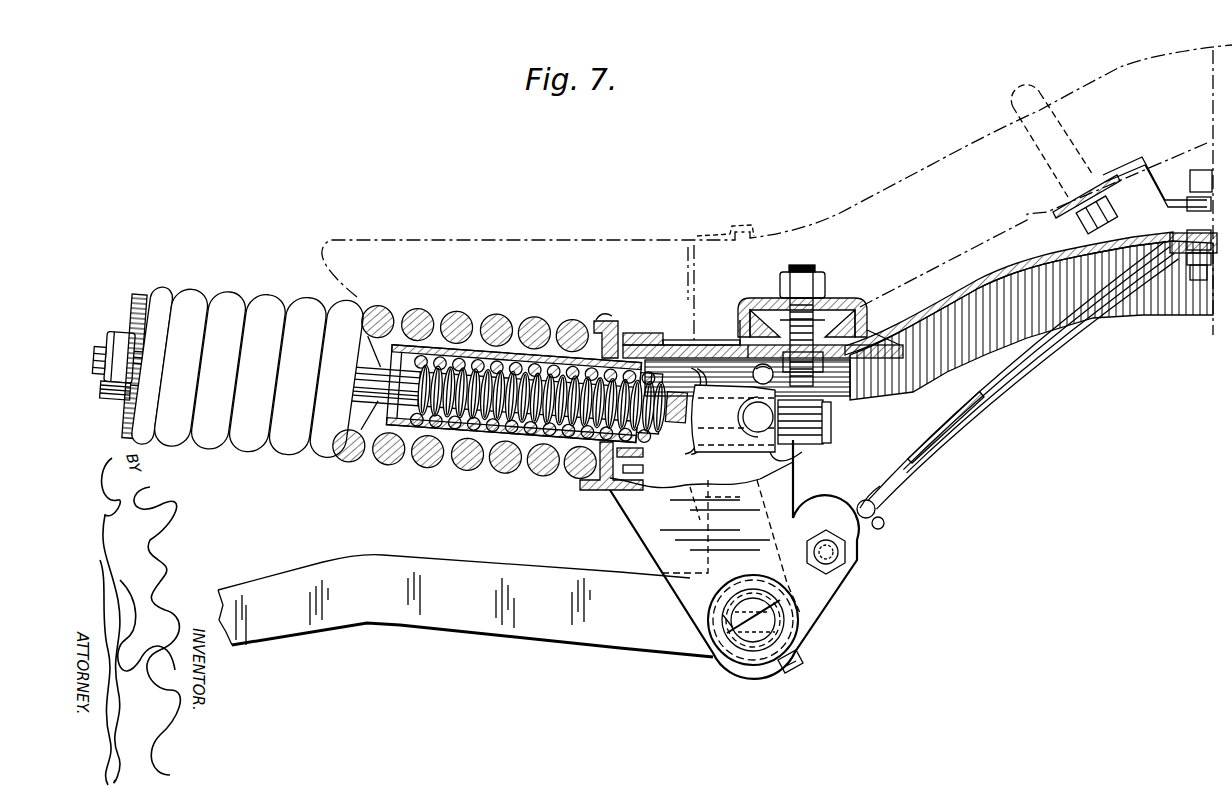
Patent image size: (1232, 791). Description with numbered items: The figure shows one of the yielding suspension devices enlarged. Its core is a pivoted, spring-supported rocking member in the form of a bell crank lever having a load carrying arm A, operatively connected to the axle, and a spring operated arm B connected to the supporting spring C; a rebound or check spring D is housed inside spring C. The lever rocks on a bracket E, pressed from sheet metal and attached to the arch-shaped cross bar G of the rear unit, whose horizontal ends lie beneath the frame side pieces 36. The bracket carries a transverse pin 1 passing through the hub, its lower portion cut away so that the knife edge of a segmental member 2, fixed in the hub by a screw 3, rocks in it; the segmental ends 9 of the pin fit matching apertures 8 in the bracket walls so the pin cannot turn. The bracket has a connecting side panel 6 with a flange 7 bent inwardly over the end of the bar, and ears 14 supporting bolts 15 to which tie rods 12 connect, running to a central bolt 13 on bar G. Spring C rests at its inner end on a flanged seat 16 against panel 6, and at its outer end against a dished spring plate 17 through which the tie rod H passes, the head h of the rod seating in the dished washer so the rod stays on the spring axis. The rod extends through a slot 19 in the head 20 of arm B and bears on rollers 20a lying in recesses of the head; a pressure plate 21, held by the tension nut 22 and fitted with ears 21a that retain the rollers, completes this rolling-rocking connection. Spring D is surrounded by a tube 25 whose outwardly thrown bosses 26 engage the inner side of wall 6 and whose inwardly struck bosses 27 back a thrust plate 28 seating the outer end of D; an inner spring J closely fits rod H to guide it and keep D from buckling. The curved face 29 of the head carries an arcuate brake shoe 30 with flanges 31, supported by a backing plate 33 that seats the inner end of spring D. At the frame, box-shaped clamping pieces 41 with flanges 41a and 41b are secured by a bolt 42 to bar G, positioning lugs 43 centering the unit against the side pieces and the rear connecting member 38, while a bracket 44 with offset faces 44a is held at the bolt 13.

The pin 1 is at (753, 620).
The segmental member 2 is at (805, 649).
The screw 3 is at (798, 666).
The side panel 6 is at (612, 490).
The flange 7 is at (655, 335).
The apertures 8 is at (727, 617).
The ends of the pin 9 is at (723, 614).
The tie rods 12 is at (1012, 388).
The central bolt 13 is at (1200, 170).
The ears 14 is at (850, 548).
The bolts 15 is at (833, 558).
The seat 16 is at (605, 320).
The dished spring plate 17 is at (136, 300).
The slot 19 is at (706, 490).
The head 20 is at (739, 417).
The rollers 20a is at (792, 445).
The pressure plate 21 is at (832, 410).
The ears 21a is at (788, 460).
The tension nut 22 is at (826, 432).
The tube 25 is at (497, 446).
The outwardly thrown bosses 26 is at (633, 472).
The inwardly struck bosses 27 is at (443, 320).
The thrust plate 28 is at (383, 432).
The curved face 29 is at (718, 345).
The brake shoe 30 is at (746, 356).
The flanges 31 is at (700, 345).
The backing plate 33 is at (641, 456).
The side pieces 36 is at (738, 232).
The rear connecting member 38 is at (920, 172).
The clamping pieces 41 is at (838, 320).
The shorter flange 41a is at (866, 330).
The longer flange 41b is at (750, 325).
The bolt 42 is at (808, 272).
The positioning lugs 43 is at (753, 374).
The laterally extending bracket 44 is at (1160, 190).
The offset angularly disposed faces 44a is at (1052, 200).
The load carrying arm A is at (465, 606).
The spring operated arm B is at (701, 478).
The supporting spring C is at (240, 452).
The check spring D is at (548, 470).
The bracket E is at (734, 559).
The cross bar G is at (1160, 316).
The tie rod H is at (92, 366).
The head h is at (112, 400).
The inner spring J is at (505, 345).